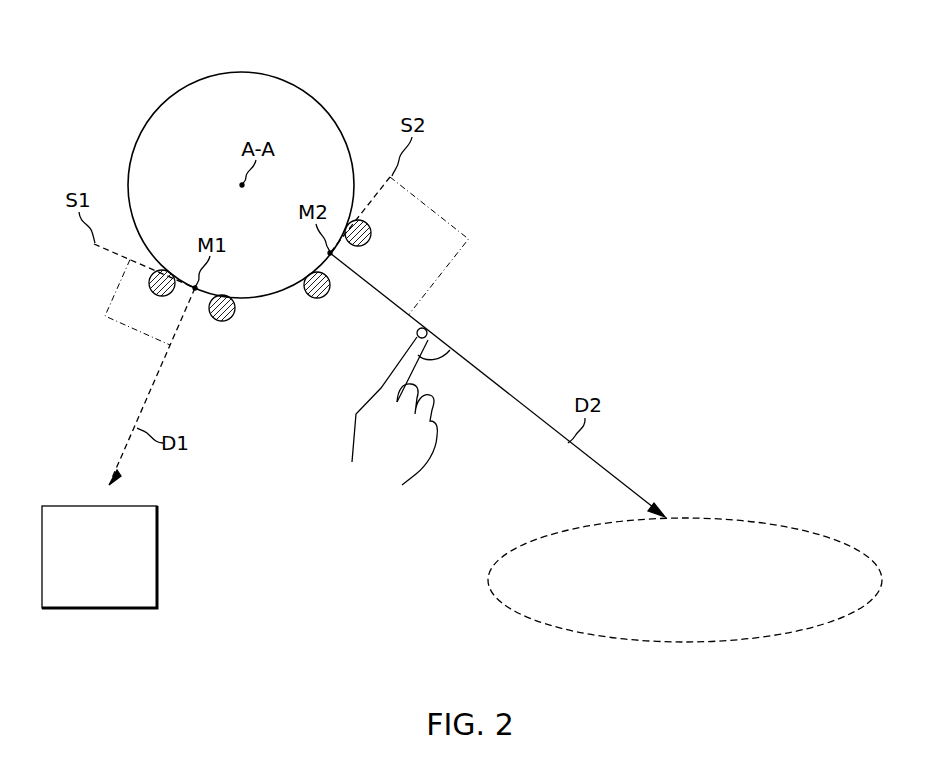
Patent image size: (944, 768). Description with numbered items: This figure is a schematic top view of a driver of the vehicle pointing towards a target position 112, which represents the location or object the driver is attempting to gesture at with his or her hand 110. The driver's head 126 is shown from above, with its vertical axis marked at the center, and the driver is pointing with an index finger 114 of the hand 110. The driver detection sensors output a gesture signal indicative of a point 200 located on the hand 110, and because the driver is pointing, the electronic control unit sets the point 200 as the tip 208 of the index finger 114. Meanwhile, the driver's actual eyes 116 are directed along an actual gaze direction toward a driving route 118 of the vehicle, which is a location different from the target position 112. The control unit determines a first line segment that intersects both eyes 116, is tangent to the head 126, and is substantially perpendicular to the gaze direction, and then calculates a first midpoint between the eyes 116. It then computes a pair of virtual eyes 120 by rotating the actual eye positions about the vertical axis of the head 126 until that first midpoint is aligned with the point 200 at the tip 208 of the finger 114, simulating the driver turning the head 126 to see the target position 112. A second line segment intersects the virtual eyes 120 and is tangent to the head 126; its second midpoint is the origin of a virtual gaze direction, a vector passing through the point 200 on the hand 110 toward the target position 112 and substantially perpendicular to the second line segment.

The hand 110 is at (421, 405).
The target position 112 is at (663, 643).
The index finger 114 is at (392, 372).
The eyes 116 is at (157, 296).
The driving route 118 is at (157, 556).
The virtual eyes 120 is at (371, 233).
The head 126 is at (259, 73).
The point 200 is at (425, 330).
The tip 208 is at (450, 350).